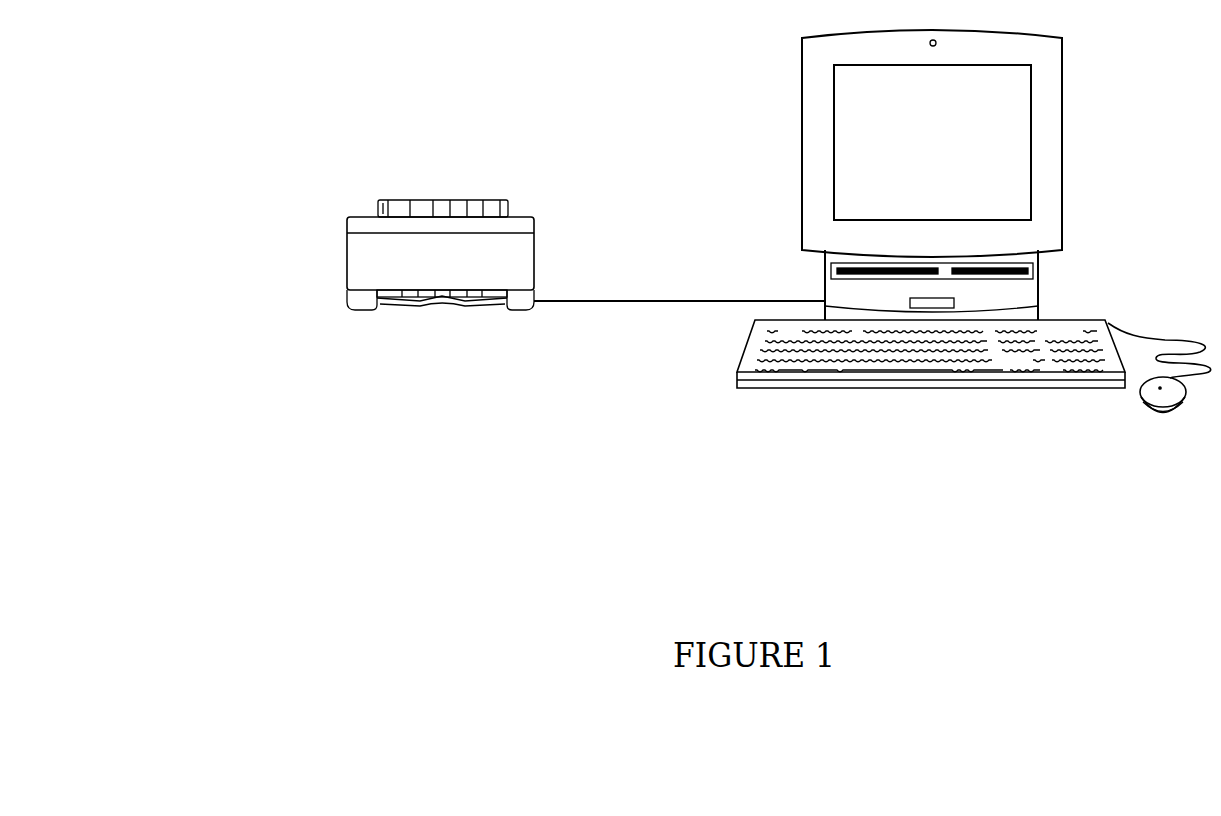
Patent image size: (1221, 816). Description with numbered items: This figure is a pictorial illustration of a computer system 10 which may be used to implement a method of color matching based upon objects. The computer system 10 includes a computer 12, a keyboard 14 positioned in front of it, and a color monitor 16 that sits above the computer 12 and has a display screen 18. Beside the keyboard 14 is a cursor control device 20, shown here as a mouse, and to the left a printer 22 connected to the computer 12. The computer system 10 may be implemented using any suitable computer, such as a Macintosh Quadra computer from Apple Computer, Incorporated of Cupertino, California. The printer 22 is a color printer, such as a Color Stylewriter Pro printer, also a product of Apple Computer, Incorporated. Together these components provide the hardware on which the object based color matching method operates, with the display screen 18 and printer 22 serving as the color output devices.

The computer system 10 is at (412, 523).
The computer 12 is at (1038, 282).
The keyboard 14 is at (972, 393).
The color monitor 16 is at (1048, 76).
The display screen 18 is at (992, 133).
The cursor control device 20 is at (1160, 390).
The printer 22 is at (375, 264).